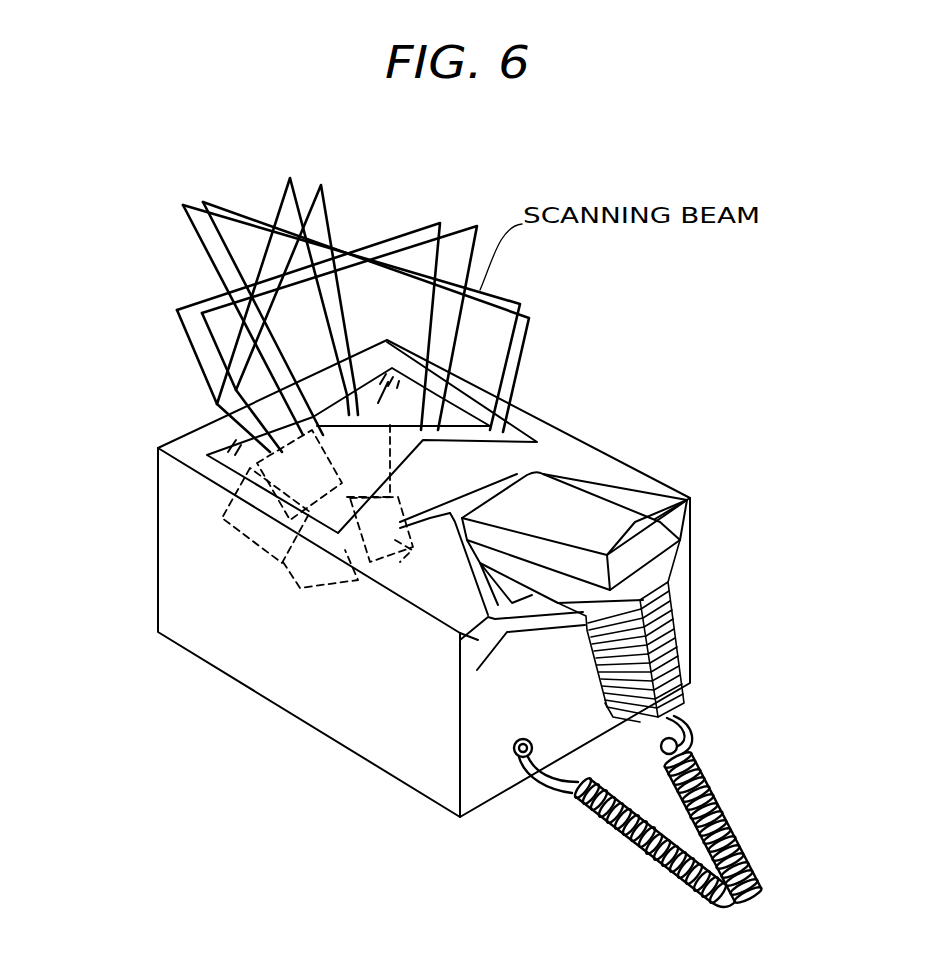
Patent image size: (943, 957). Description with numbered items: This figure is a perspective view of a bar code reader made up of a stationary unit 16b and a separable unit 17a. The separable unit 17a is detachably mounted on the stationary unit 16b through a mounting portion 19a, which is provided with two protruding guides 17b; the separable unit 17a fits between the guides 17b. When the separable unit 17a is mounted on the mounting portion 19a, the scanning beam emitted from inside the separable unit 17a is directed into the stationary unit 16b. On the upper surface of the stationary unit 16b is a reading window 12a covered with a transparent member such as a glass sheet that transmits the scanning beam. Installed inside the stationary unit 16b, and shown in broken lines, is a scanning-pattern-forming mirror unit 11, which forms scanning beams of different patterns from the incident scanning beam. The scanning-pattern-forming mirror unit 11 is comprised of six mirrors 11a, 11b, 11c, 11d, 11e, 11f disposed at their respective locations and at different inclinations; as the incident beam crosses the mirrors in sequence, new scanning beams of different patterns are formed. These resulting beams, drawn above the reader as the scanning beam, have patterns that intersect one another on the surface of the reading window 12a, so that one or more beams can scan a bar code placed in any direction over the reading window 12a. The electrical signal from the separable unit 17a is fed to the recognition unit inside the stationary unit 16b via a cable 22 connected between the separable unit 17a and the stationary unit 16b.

The scanning-pattern-forming mirror unit 11 is at (262, 577).
The mirror 11a is at (303, 588).
The mirror 11b is at (367, 563).
The mirror 11c is at (402, 547).
The mirror 11d is at (255, 528).
The mirror 11e is at (265, 455).
The mirror 11f is at (390, 477).
The reading window 12a is at (507, 433).
The stationary unit 16b is at (158, 523).
The separable unit 17a is at (600, 513).
The protruding guides 17b is at (557, 627).
The mounting portion 19a is at (500, 497).
The cable 22 is at (740, 828).